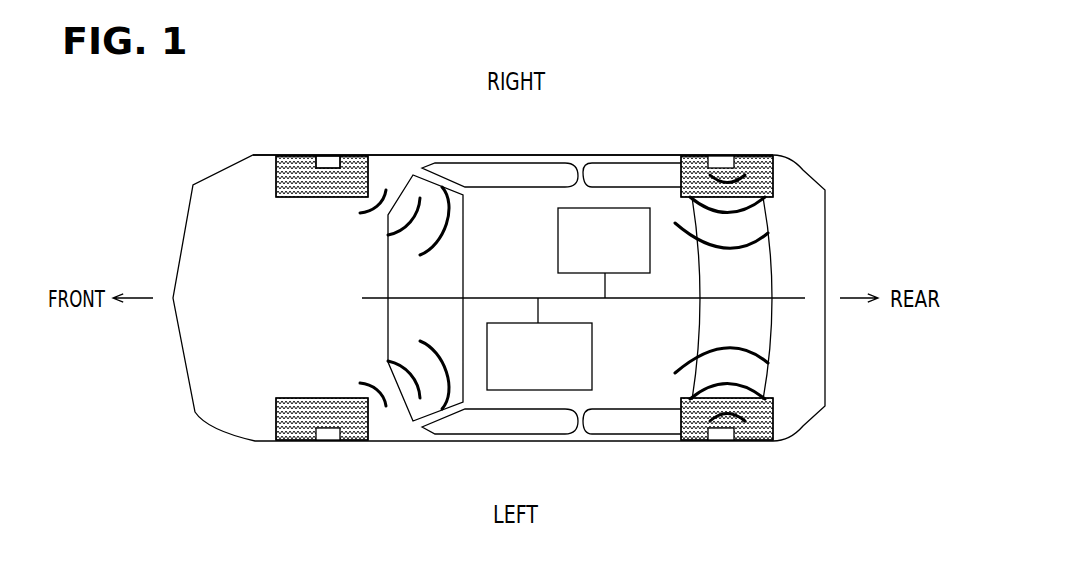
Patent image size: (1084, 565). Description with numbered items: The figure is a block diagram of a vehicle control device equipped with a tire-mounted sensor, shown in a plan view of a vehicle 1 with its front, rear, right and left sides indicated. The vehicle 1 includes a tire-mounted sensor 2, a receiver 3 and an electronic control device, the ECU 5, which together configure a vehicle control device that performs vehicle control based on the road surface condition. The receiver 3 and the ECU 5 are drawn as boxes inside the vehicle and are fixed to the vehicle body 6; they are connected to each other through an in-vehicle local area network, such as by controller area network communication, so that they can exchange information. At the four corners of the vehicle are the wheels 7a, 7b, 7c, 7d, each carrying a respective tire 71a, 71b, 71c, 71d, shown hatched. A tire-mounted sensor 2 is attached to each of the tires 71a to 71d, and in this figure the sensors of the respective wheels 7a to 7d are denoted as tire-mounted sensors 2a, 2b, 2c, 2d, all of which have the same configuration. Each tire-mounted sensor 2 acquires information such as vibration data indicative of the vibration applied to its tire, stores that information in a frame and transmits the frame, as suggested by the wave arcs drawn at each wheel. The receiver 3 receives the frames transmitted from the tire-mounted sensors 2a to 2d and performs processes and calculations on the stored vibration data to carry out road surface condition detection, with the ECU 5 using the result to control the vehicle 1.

The vehicle 1 is at (821, 146).
The tire-mounted sensor 2 is at (346, 146).
The tire-mounted sensor 2a is at (327, 160).
The tire-mounted sensor 2b is at (328, 437).
The tire-mounted sensor 2c is at (720, 157).
The tire-mounted sensor 2d is at (716, 437).
The receiver 3 is at (592, 357).
The electronic control device (ECU) 5 is at (650, 237).
The vehicle body 6 is at (433, 153).
The wheel 7a is at (276, 151).
The wheel 7b is at (280, 453).
The wheel 7c is at (754, 146).
The wheel 7d is at (768, 450).
The tire 71a is at (277, 178).
The tire 71b is at (277, 411).
The tire 71c is at (773, 165).
The tire 71d is at (773, 426).